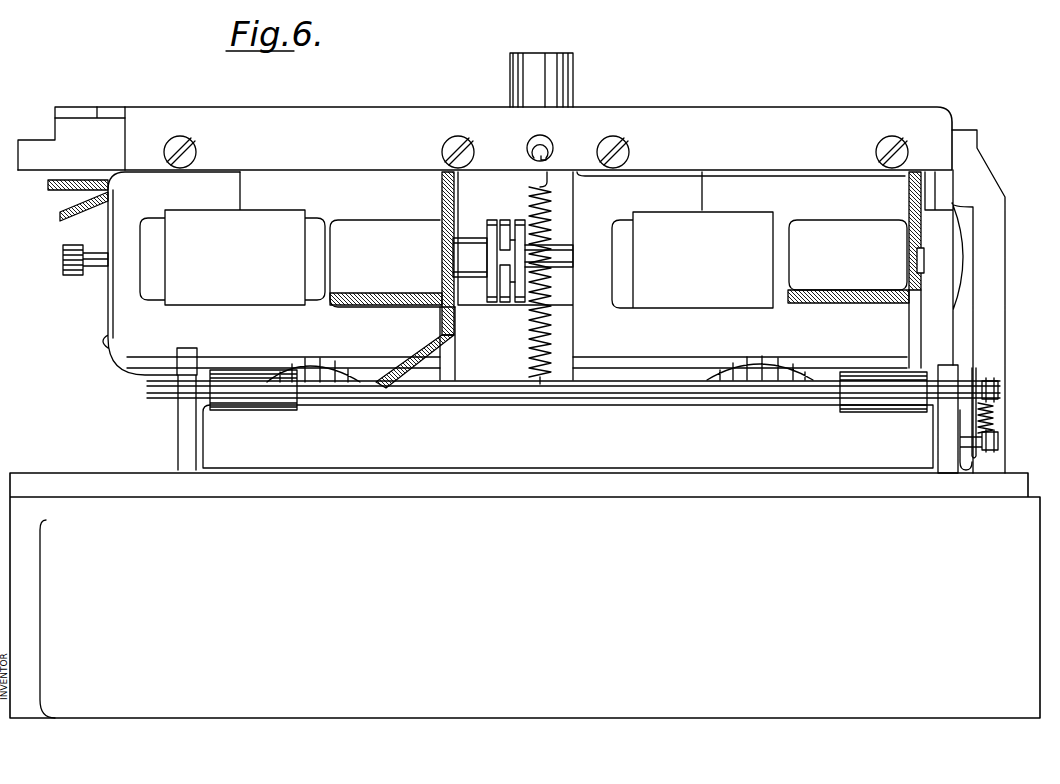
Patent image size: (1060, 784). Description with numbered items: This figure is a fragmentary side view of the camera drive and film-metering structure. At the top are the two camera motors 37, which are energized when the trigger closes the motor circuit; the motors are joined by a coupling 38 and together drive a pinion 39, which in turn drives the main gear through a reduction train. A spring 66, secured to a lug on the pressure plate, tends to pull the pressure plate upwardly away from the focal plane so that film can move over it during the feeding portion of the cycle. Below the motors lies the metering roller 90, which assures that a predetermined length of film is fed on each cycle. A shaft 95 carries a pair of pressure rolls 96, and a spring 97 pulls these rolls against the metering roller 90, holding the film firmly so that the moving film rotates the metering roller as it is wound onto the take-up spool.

The camera motors 37 is at (360, 181).
The coupling 38 is at (503, 303).
The pinion 39 is at (80, 278).
The spring 66 is at (528, 336).
The metering roller 90 is at (871, 459).
The shaft 95 is at (752, 394).
The pressure rolls 96 is at (283, 411).
The spring 97 is at (992, 420).